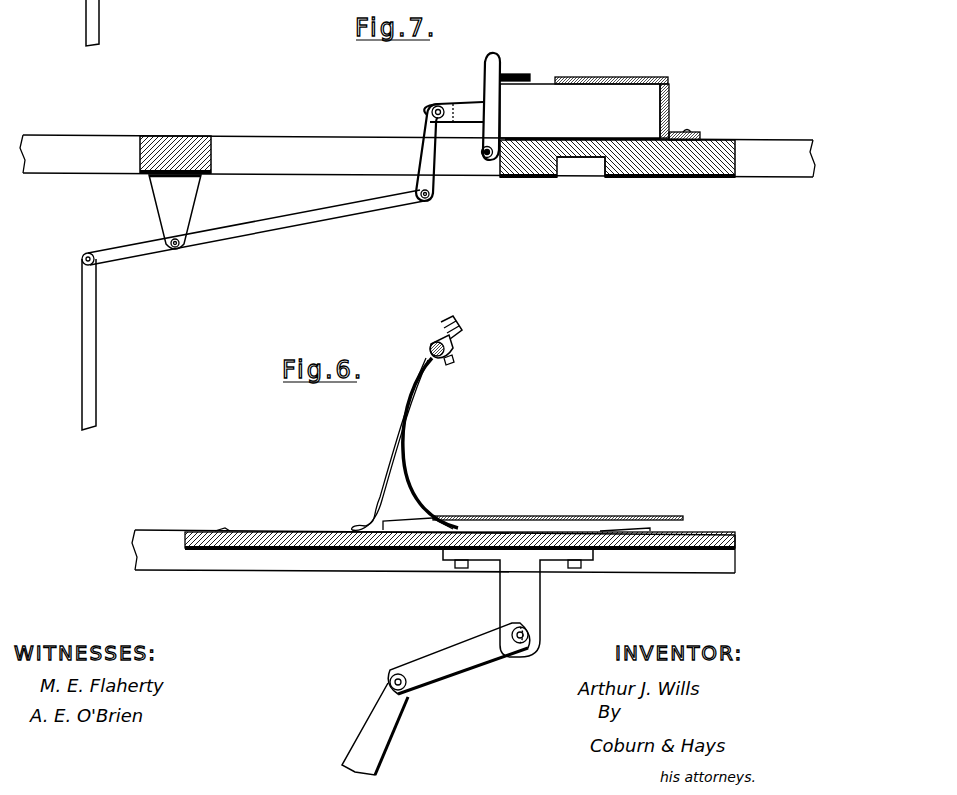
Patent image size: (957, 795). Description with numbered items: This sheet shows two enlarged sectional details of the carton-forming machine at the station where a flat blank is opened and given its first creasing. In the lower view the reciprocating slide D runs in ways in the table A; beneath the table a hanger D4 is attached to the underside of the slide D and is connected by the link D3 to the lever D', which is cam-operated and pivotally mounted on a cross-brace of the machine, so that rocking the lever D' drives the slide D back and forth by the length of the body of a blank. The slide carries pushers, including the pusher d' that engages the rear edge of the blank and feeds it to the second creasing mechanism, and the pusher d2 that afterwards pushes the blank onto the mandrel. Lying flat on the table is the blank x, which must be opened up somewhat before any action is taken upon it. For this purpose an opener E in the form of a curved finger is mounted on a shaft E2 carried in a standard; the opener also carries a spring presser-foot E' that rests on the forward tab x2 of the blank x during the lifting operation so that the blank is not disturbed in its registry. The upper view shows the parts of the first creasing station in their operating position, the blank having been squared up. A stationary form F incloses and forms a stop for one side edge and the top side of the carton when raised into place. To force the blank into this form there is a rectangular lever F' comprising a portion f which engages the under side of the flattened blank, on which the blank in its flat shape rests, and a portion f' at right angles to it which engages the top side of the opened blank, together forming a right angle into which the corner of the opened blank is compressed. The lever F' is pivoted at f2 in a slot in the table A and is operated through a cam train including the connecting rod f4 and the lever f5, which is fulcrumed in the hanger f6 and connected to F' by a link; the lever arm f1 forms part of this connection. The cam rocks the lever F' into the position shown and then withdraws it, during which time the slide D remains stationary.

In FIG. 7, the table A is at (713, 172).
In FIG. 6, the table A is at (718, 573).
In FIG. 7, the slide D is at (581, 178).
In FIG. 6, the slide D is at (460, 517).
In FIG. 7, the blank x is at (608, 139).
In FIG. 6, the blank x is at (518, 520).
In FIG. 7, the form F is at (600, 95).
In FIG. 7, the lever F' is at (457, 98).
In FIG. 7, the portion of lever f is at (500, 106).
In FIG. 7, the portion of lever f' is at (516, 60).
In FIG. 7, the lever arm f1 is at (416, 148).
In FIG. 7, the pivot f2 is at (487, 157).
In FIG. 7, the connecting rod f4 is at (93, 342).
In FIG. 7, the lever f5 is at (302, 216).
In FIG. 7, the hanger f6 is at (175, 212).
In FIG. 6, the pusher d2 is at (224, 528).
In FIG. 6, the pusher d' is at (625, 505).
In FIG. 6, the forward tab x2 is at (384, 522).
In FIG. 6, the opener E is at (430, 443).
In FIG. 6, the spring presser-foot E' is at (386, 444).
In FIG. 6, the shaft E2 is at (450, 338).
In FIG. 6, the hanger D4 is at (523, 600).
In FIG. 6, the link D3 is at (489, 661).
In FIG. 6, the lever D' is at (383, 729).